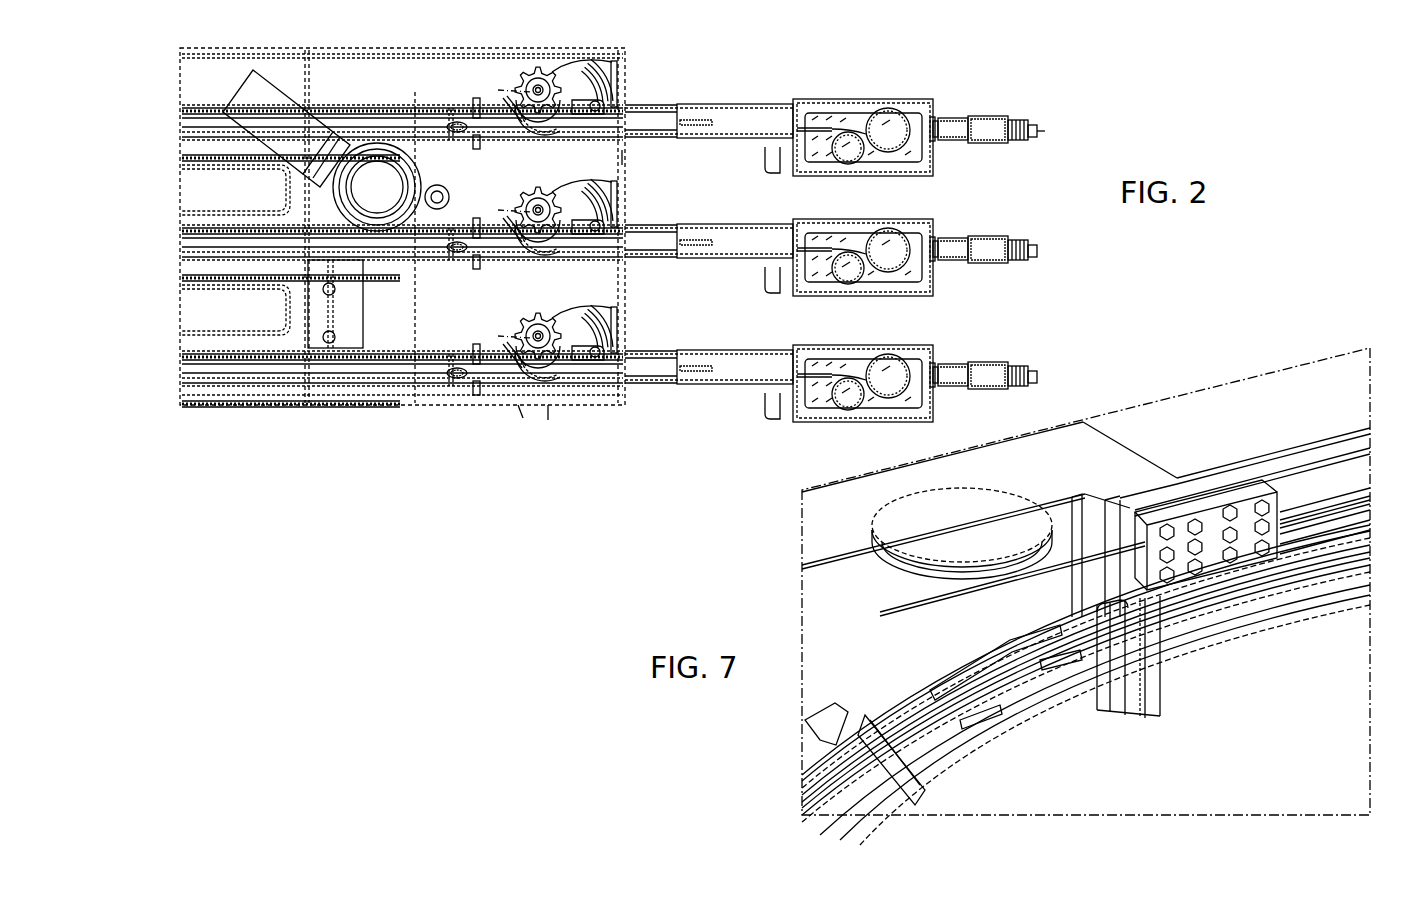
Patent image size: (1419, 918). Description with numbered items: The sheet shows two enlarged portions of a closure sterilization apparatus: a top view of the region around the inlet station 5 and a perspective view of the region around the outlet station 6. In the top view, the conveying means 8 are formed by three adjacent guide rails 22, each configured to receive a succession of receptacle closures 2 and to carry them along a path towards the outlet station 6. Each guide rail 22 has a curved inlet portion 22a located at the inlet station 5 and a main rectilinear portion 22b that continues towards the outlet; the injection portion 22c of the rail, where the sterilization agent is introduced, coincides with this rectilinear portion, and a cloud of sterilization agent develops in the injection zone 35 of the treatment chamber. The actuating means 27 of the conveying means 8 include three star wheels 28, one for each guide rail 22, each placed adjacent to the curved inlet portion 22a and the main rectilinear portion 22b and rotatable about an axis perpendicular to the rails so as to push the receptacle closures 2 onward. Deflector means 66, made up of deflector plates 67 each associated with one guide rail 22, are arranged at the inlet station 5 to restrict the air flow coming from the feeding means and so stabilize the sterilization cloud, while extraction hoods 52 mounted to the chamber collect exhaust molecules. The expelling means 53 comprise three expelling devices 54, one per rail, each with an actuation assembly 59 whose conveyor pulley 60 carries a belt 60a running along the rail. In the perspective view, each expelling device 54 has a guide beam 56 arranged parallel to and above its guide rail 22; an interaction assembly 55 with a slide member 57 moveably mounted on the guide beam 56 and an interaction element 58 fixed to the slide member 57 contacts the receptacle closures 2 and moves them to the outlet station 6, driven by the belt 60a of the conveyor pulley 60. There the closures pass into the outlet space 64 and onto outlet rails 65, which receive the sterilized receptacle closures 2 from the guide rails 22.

In FIG. 2, the conveying means 8 is at (635, 52).
In FIG. 2, the extraction hood 52 is at (270, 97).
In FIG. 2, the main rectilinear portion 22b is at (358, 108).
In FIG. 2, the injection portion 22c is at (406, 108).
In FIG. 2, the star wheel 28 is at (526, 80).
In FIG. 2, the curved inlet portion 22a is at (622, 80).
In FIG. 2, the belt 60a is at (734, 105).
In FIG. 7, the belt 60a is at (1317, 500).
In FIG. 2, the conveyor pulley 60 is at (894, 101).
In FIG. 7, the conveyor pulley 60 is at (906, 603).
In FIG. 2, the actuation assembly 59 is at (942, 103).
In FIG. 2, the expelling device 54 is at (976, 117).
In FIG. 2, the expelling means 53 is at (1046, 108).
In FIG. 2, the guide rail 22 is at (458, 150).
In FIG. 2, the deflector plate 67 is at (556, 138).
In FIG. 2, the inlet station 5 is at (623, 157).
In FIG. 2, the injection zone 35 is at (215, 320).
In FIG. 2, the actuating means 27 is at (520, 418).
In FIG. 2, the deflector means 66 is at (550, 420).
In FIG. 7, the outlet station 6 is at (1082, 592).
In FIG. 7, the slide member 57 is at (1190, 470).
In FIG. 7, the interaction assembly 55 is at (1223, 462).
In FIG. 7, the guide beam 56 is at (1343, 462).
In FIG. 7, the receptacle closure 2 is at (1042, 630).
In FIG. 7, the interaction element 58 is at (1173, 583).
In FIG. 7, the outlet space 64 is at (946, 776).
In FIG. 7, the outlet rail 65 is at (1018, 727).